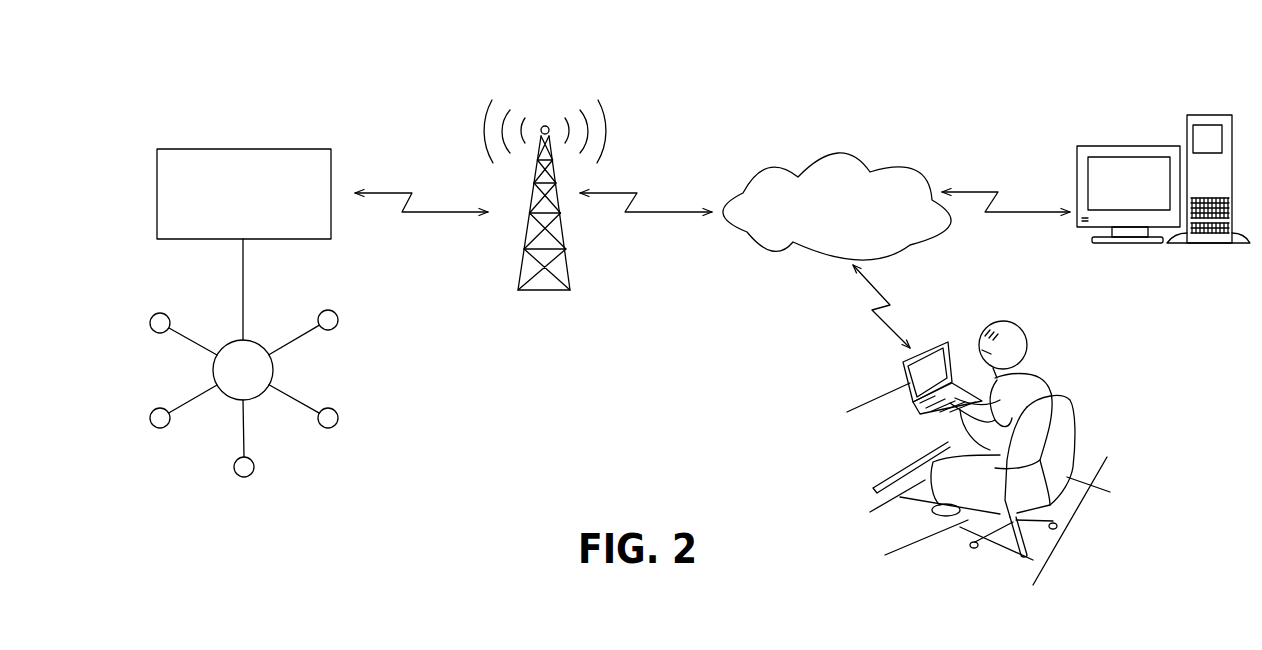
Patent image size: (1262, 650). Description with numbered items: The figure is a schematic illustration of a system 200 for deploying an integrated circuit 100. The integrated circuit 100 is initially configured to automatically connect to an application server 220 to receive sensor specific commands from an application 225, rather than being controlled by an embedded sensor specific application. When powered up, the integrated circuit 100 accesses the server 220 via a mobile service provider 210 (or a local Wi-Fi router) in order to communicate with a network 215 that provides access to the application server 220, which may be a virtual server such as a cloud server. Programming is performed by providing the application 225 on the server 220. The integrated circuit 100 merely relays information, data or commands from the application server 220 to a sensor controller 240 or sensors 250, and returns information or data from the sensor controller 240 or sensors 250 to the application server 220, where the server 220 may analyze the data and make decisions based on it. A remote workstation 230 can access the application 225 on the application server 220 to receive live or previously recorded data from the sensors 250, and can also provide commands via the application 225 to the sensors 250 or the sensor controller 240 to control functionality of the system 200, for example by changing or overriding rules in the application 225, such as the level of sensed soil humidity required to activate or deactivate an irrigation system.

The system 200 is at (243, 73).
The integrated circuit 100 is at (197, 148).
The mobile service provider 210 is at (546, 125).
The network 215 is at (836, 152).
The application server 220 is at (1127, 110).
The application 225 is at (1205, 115).
The remote workstation 230 is at (923, 348).
The sensor controller 240 is at (233, 340).
The sensors 250 is at (337, 318).